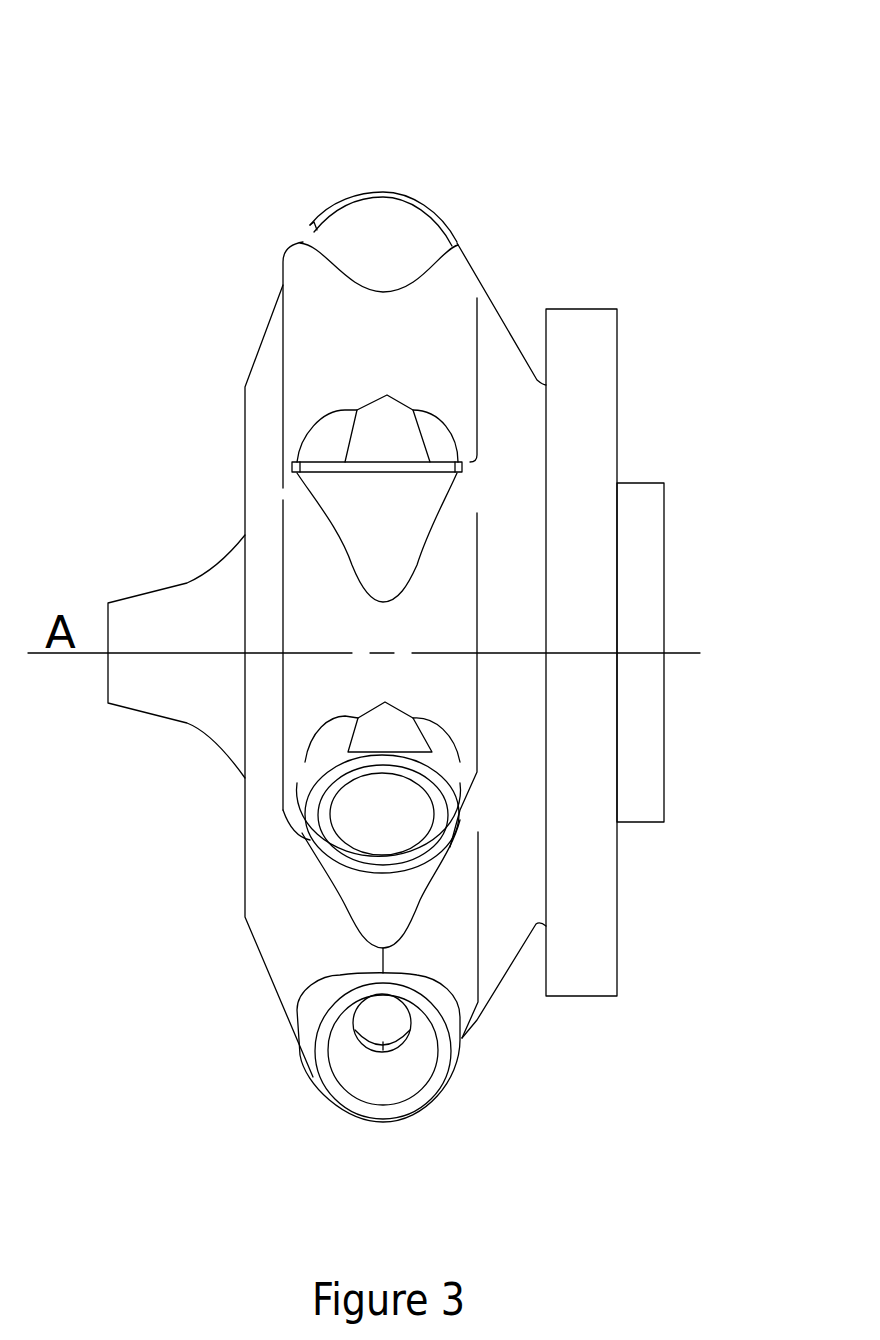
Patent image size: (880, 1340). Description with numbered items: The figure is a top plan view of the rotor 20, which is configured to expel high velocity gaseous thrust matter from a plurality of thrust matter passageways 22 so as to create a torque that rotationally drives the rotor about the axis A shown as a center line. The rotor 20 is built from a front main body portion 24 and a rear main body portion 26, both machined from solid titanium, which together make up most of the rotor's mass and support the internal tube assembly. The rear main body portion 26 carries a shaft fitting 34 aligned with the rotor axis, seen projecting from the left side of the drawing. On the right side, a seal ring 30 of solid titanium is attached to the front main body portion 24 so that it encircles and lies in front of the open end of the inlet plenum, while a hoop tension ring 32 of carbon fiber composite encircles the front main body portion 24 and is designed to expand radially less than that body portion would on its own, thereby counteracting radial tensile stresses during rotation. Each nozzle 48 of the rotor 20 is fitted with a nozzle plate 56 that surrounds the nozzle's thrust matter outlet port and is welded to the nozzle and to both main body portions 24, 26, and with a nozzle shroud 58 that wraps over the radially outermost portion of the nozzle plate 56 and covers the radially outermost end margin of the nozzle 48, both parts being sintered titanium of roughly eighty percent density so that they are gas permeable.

The rotor 20 is at (563, 100).
The thrust matter passageway 22 is at (364, 824).
The front main body portion 24 is at (493, 337).
The rear main body portion 26 is at (272, 412).
The seal ring 30 is at (640, 503).
The hoop tension ring 32 is at (588, 323).
The shaft fitting 34 is at (128, 673).
The nozzle 48 is at (385, 845).
The nozzle plate 56 is at (315, 777).
The nozzle shroud 58 is at (365, 512).